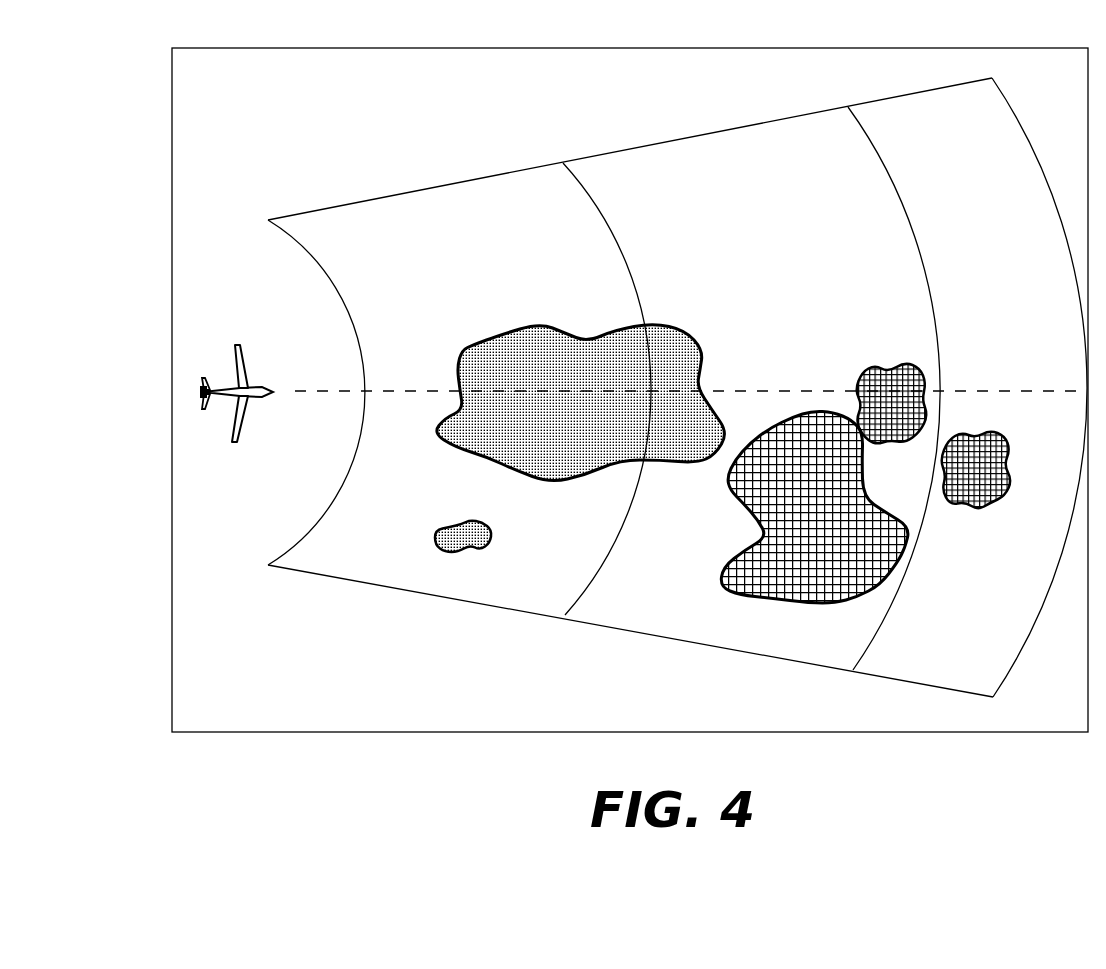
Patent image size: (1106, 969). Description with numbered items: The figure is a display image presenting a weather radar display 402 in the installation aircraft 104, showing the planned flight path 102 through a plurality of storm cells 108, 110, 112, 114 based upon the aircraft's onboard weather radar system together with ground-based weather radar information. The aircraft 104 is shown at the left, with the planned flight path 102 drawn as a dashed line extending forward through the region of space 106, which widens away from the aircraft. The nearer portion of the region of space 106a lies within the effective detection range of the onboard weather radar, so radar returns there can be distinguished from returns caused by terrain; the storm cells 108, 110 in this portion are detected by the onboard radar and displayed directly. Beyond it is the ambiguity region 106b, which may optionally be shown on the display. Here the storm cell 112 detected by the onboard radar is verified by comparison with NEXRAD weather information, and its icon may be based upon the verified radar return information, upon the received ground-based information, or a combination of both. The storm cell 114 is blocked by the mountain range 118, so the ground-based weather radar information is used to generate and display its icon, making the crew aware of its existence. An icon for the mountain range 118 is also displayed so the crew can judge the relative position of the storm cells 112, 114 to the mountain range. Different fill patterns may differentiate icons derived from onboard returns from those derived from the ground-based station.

The planned flight path 102 is at (376, 393).
The installation aircraft 104 is at (237, 457).
The region of space 106 is at (747, 180).
The region of space within effective detection range 106a is at (527, 258).
The ambiguity region 106b is at (958, 330).
The storm cell 108 is at (464, 353).
The storm cell 110 is at (493, 540).
The storm cell 112 is at (902, 364).
The storm cell 114 is at (970, 510).
The mountain range 118 is at (863, 601).
The weather radar display 402 is at (993, 758).